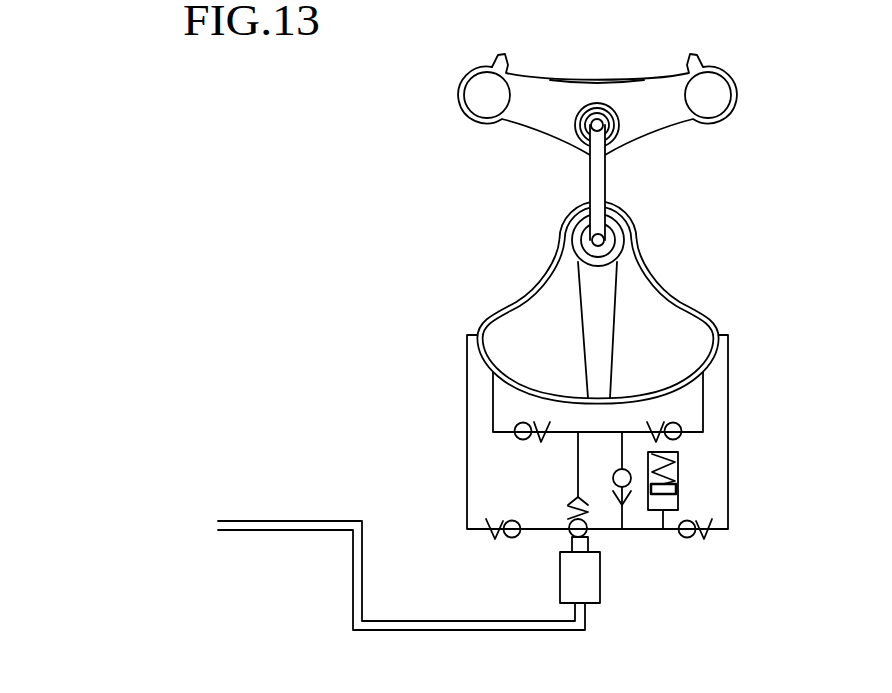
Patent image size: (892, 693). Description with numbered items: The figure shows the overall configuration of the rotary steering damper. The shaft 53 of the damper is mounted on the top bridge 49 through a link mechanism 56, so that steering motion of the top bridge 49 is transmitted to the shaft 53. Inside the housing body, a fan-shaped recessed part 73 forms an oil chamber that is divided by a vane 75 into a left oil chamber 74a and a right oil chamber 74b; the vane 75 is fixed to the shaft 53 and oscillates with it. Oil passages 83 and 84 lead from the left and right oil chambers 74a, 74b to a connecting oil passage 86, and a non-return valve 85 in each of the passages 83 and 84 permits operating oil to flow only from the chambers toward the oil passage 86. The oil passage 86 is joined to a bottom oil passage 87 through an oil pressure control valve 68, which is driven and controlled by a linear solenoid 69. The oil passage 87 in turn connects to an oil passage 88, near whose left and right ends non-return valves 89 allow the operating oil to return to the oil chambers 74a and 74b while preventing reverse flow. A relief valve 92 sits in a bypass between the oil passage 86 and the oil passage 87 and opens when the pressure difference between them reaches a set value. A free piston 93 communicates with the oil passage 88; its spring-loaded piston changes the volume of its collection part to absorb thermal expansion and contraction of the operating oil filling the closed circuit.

The top bridge 49 is at (552, 78).
The link mechanism 56 is at (600, 177).
The shaft 53 is at (583, 233).
The fan-shaped recessed part 73 is at (640, 278).
The left oil chamber 74a is at (523, 330).
The right oil chamber 74b is at (650, 307).
The vane 75 is at (603, 347).
The oil passage 86 is at (600, 427).
The oil passage 83 is at (493, 394).
The oil passage 84 is at (703, 392).
The non-return valve 85 is at (514, 437).
The bottom oil passage 87 is at (542, 528).
The oil passage 88 is at (467, 500).
The non-return valve 89 is at (507, 537).
The oil pressure control valve 68 is at (572, 531).
The linear solenoid 69 is at (592, 591).
The relief valve 92 is at (631, 485).
The free piston 93 is at (679, 477).